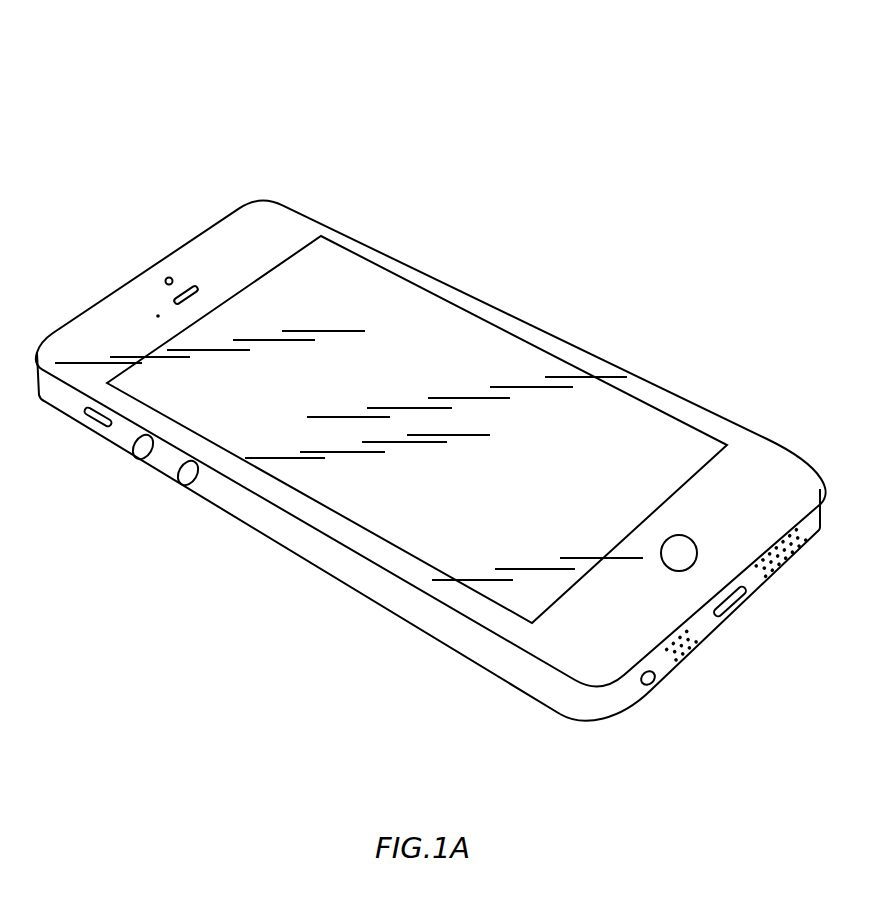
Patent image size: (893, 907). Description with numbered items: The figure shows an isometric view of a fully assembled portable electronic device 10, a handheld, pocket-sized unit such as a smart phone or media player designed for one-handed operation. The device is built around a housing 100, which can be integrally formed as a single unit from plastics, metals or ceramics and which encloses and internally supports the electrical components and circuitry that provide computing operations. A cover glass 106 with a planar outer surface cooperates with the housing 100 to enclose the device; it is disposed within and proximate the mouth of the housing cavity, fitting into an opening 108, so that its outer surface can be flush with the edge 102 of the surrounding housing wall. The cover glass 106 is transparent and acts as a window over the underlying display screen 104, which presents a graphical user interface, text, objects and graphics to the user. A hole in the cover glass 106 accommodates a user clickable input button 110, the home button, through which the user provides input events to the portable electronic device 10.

The portable electronic device 10 is at (188, 75).
The housing 100 is at (274, 525).
The edge of the housing wall 102 is at (425, 261).
The display screen 104 is at (672, 408).
The cover glass 106 is at (482, 325).
The opening 108 is at (576, 651).
The user clickable input button 110 is at (694, 531).